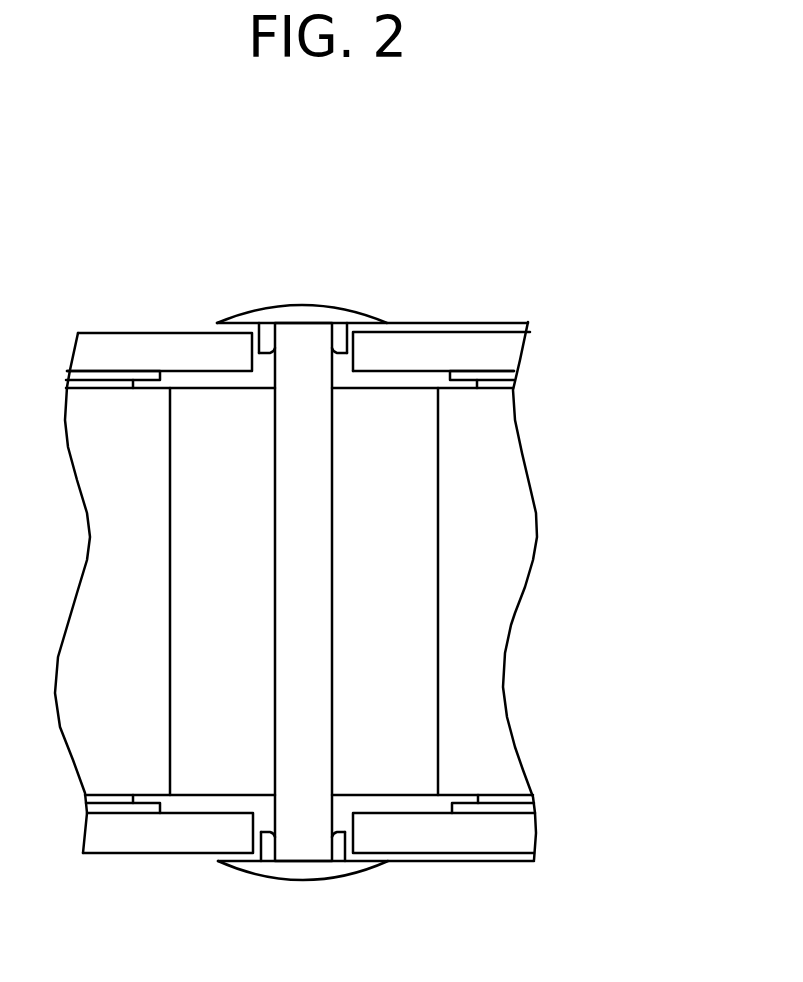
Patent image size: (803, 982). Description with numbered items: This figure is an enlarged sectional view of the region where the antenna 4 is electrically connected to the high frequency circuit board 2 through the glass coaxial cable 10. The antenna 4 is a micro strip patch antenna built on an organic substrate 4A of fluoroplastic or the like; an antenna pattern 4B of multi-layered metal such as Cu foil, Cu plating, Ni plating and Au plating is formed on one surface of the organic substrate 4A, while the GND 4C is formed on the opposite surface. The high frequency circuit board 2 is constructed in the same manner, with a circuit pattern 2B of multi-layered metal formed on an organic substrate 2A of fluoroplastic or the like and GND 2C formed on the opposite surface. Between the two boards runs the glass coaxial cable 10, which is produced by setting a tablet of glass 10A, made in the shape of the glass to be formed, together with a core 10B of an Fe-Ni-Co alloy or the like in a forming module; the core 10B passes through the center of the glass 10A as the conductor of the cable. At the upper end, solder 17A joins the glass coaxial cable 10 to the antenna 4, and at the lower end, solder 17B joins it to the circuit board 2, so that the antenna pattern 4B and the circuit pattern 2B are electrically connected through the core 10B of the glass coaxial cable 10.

The high frequency circuit board 2 is at (398, 824).
The organic substrate 2A is at (535, 830).
The circuit pattern 2B is at (439, 856).
The GND 2C is at (537, 808).
The antenna 4 is at (389, 348).
The organic substrate 4A is at (520, 357).
The antenna pattern 4B is at (529, 331).
The GND 4C is at (362, 388).
The glass coaxial cable 10 is at (408, 592).
The glass 10A is at (403, 542).
The core 10B is at (335, 598).
The solder 17A is at (270, 316).
The solder 17B is at (270, 865).